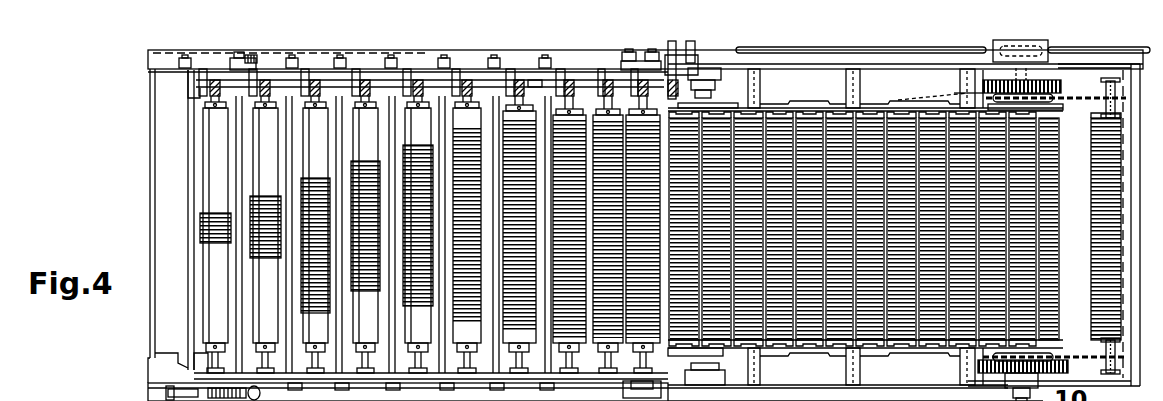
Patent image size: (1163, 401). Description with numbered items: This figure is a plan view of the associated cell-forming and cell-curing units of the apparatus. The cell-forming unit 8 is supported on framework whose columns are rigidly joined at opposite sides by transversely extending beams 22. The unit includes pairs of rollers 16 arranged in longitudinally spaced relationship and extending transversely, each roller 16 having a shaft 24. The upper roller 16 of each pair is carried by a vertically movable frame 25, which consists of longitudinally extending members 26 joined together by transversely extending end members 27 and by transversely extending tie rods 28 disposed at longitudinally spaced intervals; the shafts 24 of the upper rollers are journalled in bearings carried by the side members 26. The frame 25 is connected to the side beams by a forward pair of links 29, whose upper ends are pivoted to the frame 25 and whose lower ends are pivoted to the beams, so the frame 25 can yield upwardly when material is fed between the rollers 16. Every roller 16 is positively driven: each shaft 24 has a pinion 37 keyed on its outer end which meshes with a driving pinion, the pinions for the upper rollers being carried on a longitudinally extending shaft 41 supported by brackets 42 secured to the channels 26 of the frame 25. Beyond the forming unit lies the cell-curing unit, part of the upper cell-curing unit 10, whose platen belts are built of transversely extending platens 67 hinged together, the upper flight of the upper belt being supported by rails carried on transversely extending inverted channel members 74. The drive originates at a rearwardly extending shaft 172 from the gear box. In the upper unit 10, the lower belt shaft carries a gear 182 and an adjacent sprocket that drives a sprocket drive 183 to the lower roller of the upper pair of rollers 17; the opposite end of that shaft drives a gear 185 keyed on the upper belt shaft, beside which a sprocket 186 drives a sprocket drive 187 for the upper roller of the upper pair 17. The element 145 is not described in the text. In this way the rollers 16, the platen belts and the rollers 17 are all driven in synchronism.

The cell-forming unit 8 is at (241, 38).
The tie rods 28 is at (268, 90).
The longitudinally extending members 26 is at (308, 64).
The vertically movable frame 25 is at (357, 60).
The brackets 42 is at (500, 70).
The longitudinally extending shaft 41 is at (525, 75).
The pinion 37 is at (563, 72).
The forward pair of links 29 is at (632, 48).
The rearwardly extending shaft 172 is at (766, 46).
The upper cell-curing unit 10 is at (893, 58).
The inverted channel members 74 is at (752, 85).
The platens 67 is at (800, 130).
The sprocket 186 is at (940, 91).
The gear 185 is at (1054, 78).
The sprocket drive 187 is at (1076, 94).
The pair of rollers 17 is at (1088, 170).
The gear 182 is at (1065, 350).
The sprocket drive 183 is at (1088, 350).
The end members 27 is at (180, 150).
The beams 22 is at (155, 185).
The sleeve 145 is at (190, 222).
The rollers 16 is at (192, 234).
The shaft 24 is at (200, 350).